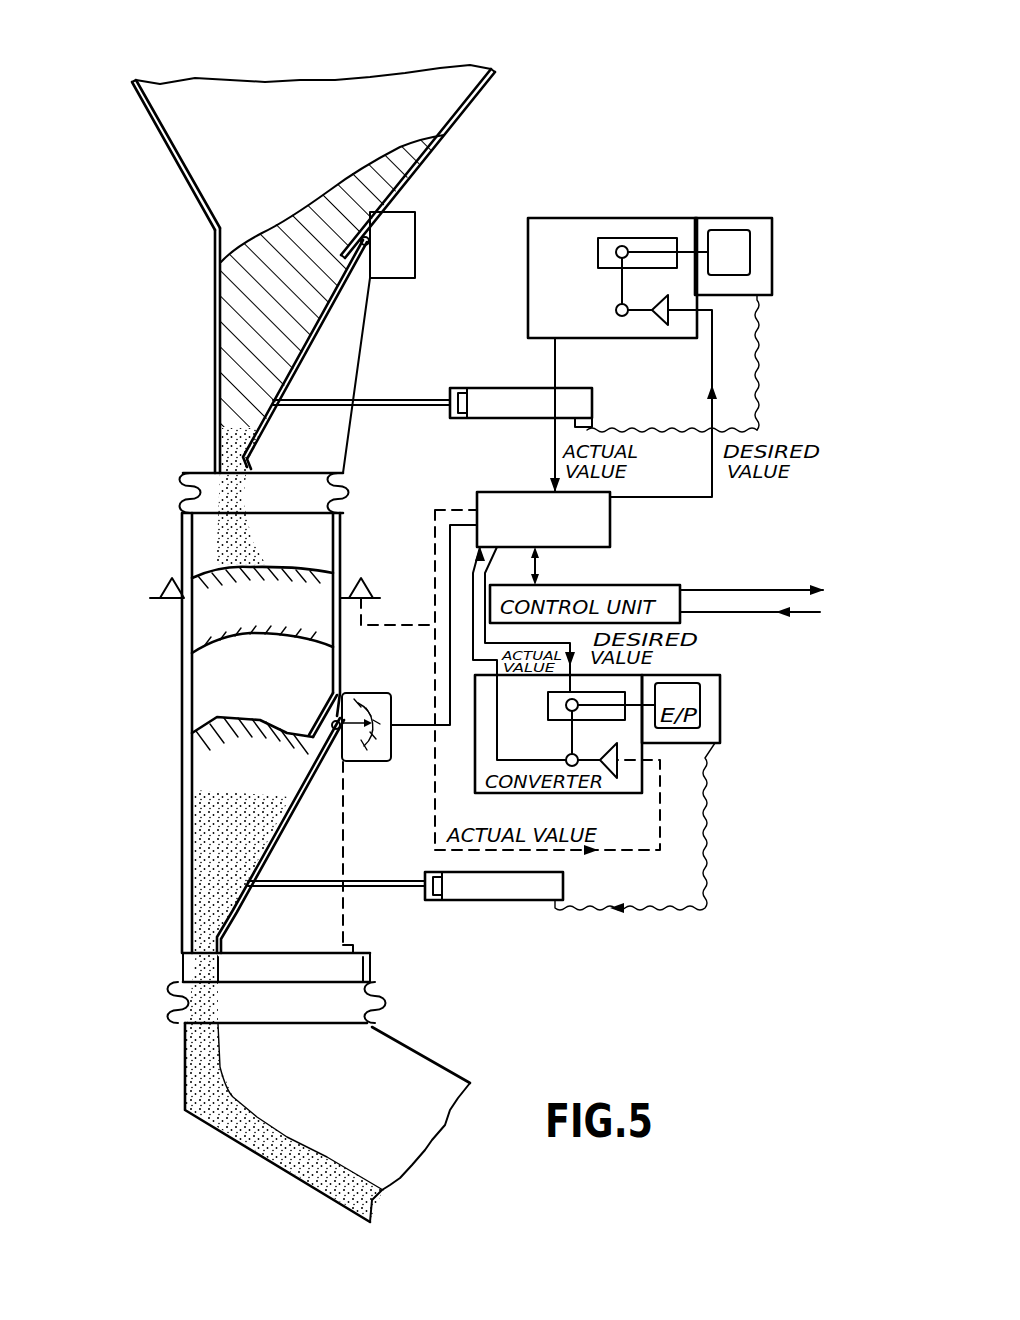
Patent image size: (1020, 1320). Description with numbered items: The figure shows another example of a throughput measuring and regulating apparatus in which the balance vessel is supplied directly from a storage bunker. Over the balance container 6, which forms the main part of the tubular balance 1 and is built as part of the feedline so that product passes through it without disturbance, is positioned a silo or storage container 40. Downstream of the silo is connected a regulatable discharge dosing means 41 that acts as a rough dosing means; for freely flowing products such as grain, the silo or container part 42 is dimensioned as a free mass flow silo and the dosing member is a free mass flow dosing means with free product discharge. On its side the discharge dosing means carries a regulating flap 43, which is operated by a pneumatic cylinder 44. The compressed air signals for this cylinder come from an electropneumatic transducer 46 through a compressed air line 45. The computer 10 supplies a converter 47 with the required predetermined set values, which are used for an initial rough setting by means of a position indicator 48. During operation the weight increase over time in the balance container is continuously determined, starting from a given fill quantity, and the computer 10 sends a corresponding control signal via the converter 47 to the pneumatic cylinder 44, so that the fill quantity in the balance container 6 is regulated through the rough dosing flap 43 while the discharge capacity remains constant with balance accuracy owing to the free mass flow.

The tubular balance 1 is at (182, 773).
The balance container 6 is at (330, 650).
The computer 10 is at (485, 488).
The silo or storage container 40 is at (192, 200).
The regulatable discharge dosing means 41 is at (217, 380).
The silo or container part 42 is at (380, 130).
The regulating flap 43 is at (330, 317).
The pneumatic cylinder 44 is at (497, 393).
The compressed air line 45 is at (763, 382).
The electropneumatic transducer 46 is at (750, 247).
The converter 47 is at (575, 232).
The position indicator 48 is at (402, 253).